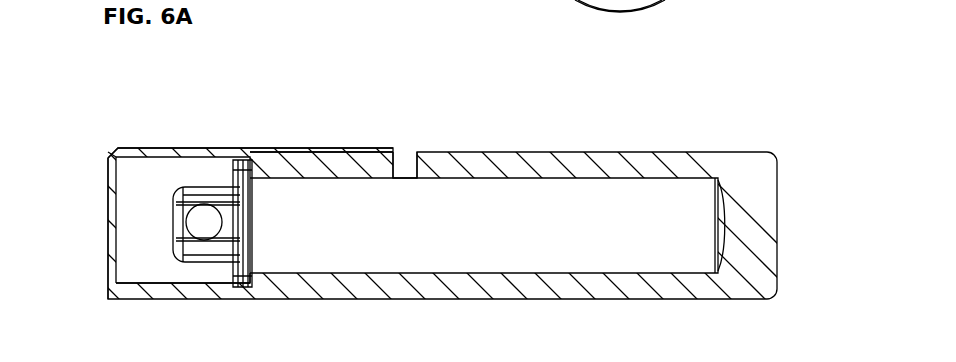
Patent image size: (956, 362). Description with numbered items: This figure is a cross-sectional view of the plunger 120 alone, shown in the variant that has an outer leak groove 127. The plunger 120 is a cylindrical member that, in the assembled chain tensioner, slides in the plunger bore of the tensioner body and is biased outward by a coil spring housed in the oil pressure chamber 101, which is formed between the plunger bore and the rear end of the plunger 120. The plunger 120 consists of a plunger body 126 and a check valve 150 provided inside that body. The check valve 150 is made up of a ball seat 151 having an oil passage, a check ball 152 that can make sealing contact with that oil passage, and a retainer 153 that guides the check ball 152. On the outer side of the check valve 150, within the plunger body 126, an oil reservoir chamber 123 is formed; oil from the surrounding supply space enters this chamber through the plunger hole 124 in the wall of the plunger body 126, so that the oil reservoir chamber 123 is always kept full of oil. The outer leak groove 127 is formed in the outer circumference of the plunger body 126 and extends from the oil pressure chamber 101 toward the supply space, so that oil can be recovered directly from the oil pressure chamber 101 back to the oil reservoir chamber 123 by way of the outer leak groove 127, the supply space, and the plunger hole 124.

The plunger 120 is at (717, 138).
The oil reservoir chamber 123 is at (483, 238).
The plunger hole 124 is at (405, 166).
The plunger body 126 is at (404, 287).
The outer leak groove 127 is at (152, 148).
The oil pressure chamber 101 is at (160, 256).
The check valve 150 is at (309, 125).
The ball seat 151 is at (258, 216).
The check ball 152 is at (207, 222).
The retainer 153 is at (197, 190).